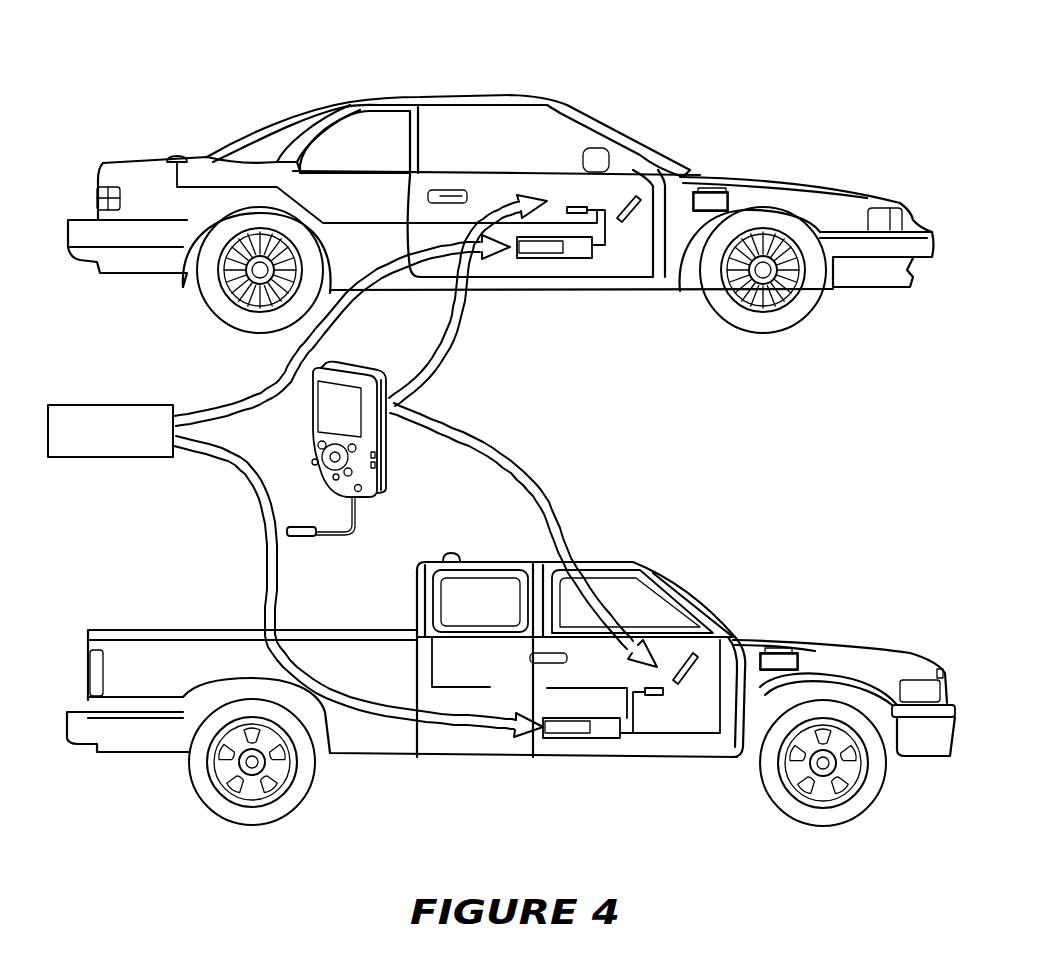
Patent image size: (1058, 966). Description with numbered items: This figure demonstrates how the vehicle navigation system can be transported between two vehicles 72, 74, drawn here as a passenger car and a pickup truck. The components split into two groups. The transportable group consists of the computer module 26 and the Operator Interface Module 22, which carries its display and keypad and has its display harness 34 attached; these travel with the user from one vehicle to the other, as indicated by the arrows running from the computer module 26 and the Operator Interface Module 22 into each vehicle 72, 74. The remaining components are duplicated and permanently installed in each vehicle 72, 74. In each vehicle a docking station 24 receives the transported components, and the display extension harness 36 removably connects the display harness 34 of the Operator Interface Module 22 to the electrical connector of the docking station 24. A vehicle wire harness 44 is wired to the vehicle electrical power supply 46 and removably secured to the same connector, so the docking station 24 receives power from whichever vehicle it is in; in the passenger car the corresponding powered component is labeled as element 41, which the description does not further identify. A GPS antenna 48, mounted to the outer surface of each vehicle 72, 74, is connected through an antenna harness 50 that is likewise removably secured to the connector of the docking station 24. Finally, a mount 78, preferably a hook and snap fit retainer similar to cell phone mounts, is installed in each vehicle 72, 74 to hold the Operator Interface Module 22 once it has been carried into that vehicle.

The Operator Interface Module 22 is at (300, 428).
The docking station 24 is at (552, 258).
The computer module 26 is at (121, 441).
The display harness 34 is at (357, 510).
The display extension harness 36 is at (593, 204).
The engine control unit 41 is at (713, 188).
The vehicle wire harness 44 is at (780, 647).
The vehicle electrical power supply 46 is at (728, 200).
The GPS antenna 48 is at (174, 156).
The antenna harness 50 is at (367, 223).
The vehicle 72 is at (498, 88).
The vehicle 74 is at (652, 556).
The mount 78 is at (630, 195).